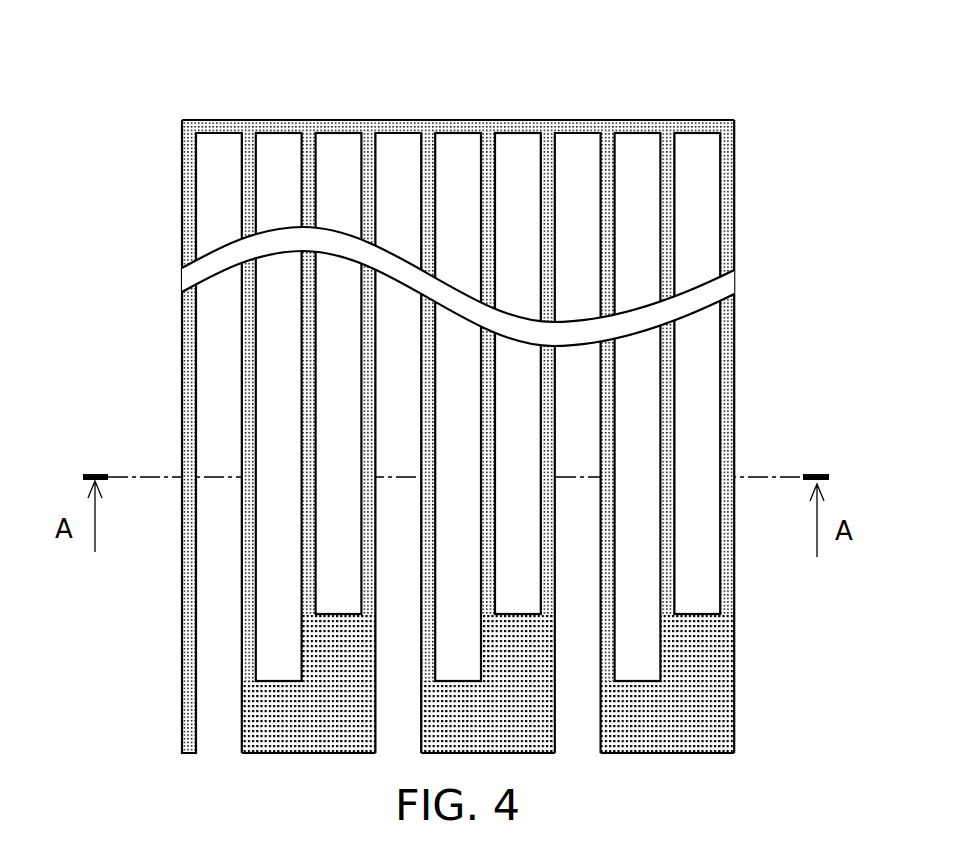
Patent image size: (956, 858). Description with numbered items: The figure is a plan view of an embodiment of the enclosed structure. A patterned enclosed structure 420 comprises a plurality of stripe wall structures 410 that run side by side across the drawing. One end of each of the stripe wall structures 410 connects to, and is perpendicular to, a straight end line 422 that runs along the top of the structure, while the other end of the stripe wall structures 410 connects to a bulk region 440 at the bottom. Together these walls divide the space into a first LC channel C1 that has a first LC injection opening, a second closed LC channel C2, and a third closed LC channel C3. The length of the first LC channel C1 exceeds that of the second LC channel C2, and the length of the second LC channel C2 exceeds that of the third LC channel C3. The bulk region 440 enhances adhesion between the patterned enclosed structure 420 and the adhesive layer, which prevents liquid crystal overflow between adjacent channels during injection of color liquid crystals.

The stripe wall structures 410 is at (182, 590).
The straight end line 422 is at (399, 121).
The patterned enclosed structure 420 is at (713, 654).
The bulk region 440 is at (705, 727).
The first LC channel C1 is at (578, 162).
The second closed LC channel C2 is at (639, 163).
The third closed LC channel C3 is at (696, 163).